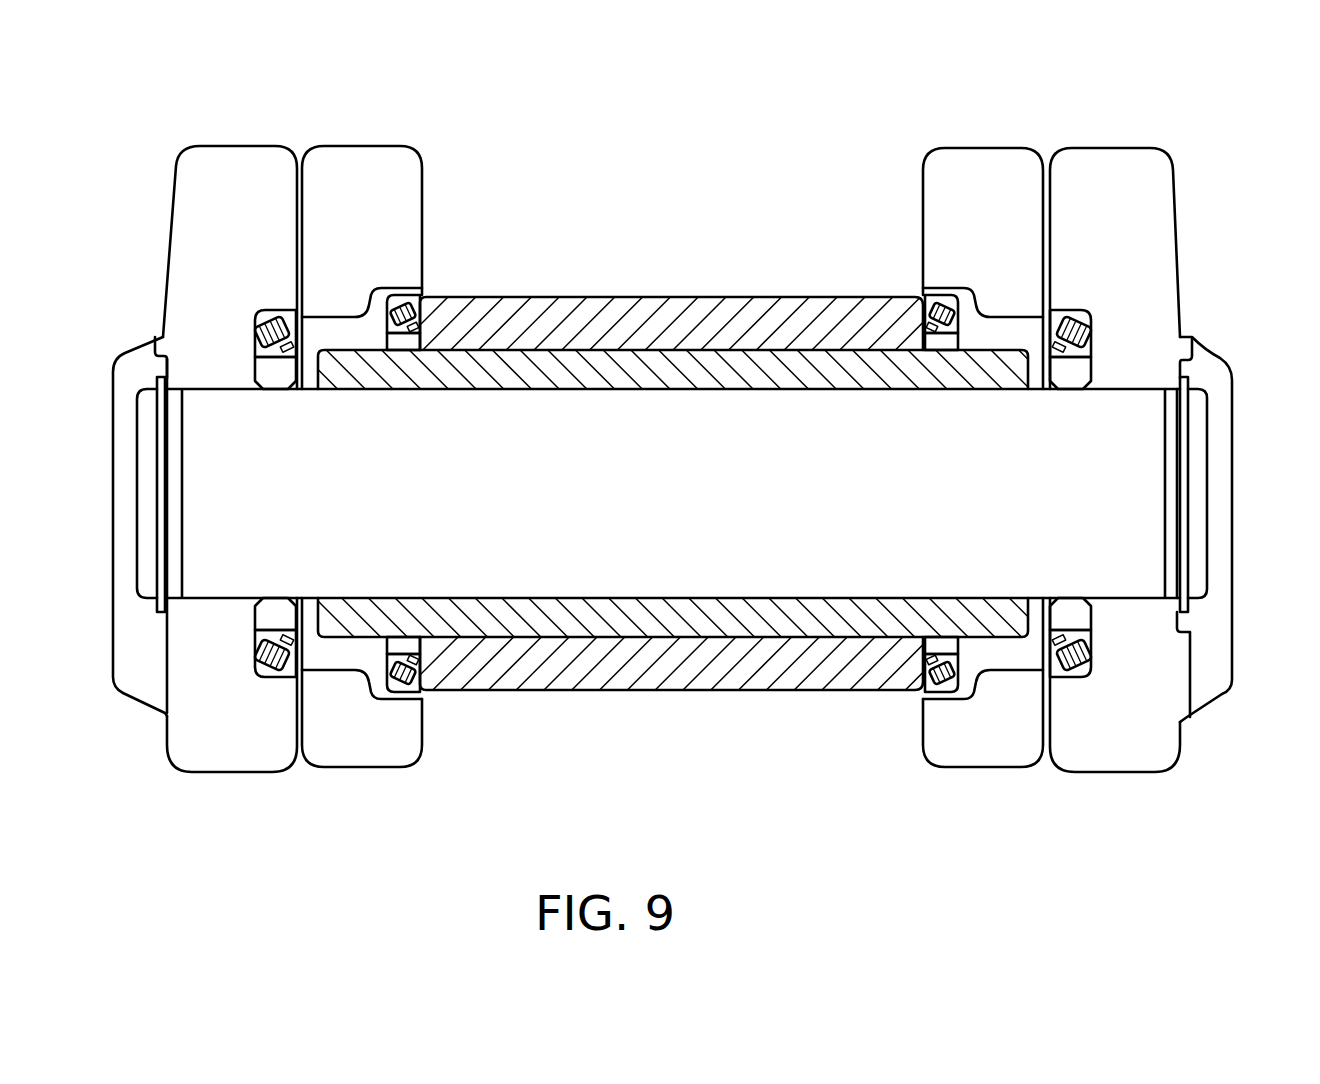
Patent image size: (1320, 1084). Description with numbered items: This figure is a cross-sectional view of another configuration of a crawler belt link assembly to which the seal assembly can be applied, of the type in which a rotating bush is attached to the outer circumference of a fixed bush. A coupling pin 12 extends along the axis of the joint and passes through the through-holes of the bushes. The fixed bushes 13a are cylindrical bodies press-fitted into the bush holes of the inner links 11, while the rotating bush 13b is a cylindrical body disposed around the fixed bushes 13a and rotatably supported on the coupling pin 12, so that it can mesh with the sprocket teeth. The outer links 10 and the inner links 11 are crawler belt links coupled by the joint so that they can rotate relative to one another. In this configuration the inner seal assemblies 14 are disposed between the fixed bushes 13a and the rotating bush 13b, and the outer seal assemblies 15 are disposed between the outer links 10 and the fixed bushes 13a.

The outer link 10 is at (243, 163).
The inner link 11 is at (365, 163).
The coupling pin 12 is at (1132, 407).
The fixed bush 13a is at (601, 372).
The rotating bush 13b is at (700, 328).
The inner seal assembly 14 is at (415, 308).
The outer seal assembly 15 is at (268, 330).